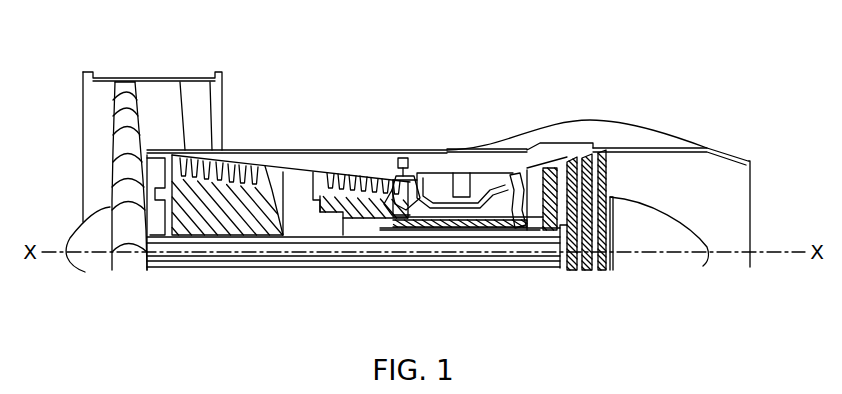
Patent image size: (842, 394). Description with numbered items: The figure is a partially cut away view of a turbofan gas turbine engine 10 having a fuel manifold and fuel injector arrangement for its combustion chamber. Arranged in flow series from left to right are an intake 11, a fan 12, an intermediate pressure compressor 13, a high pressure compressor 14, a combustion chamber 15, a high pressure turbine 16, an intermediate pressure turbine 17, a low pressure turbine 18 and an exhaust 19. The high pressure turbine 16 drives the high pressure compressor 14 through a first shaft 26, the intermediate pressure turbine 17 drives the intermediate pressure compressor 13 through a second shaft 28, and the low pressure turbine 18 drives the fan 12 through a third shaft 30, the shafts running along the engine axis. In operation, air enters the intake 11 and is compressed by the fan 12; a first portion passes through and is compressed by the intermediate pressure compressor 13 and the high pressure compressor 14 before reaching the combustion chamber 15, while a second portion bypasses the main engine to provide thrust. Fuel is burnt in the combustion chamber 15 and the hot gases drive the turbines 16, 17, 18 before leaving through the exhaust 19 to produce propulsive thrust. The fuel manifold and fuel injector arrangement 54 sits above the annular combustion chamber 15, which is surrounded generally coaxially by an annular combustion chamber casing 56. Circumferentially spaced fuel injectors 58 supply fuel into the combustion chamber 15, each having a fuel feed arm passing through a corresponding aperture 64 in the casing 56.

The turbofan gas turbine engine 10 is at (341, 109).
The intake 11 is at (72, 159).
The fan 12 is at (132, 102).
The intermediate pressure compressor 13 is at (240, 164).
The high pressure compressor 14 is at (370, 162).
The combustion chamber 15 is at (460, 167).
The high pressure turbine 16 is at (522, 172).
The intermediate pressure turbine 17 is at (561, 165).
The low pressure turbine 18 is at (590, 173).
The exhaust 19 is at (742, 216).
The first shaft 26 is at (497, 224).
The second shaft 28 is at (306, 240).
The third shaft 30 is at (249, 269).
The fuel manifold and fuel injector arrangement 54 is at (407, 149).
The annular combustion chamber casing 56 is at (411, 182).
The fuel injector 58 is at (410, 198).
The aperture 64 is at (376, 182).